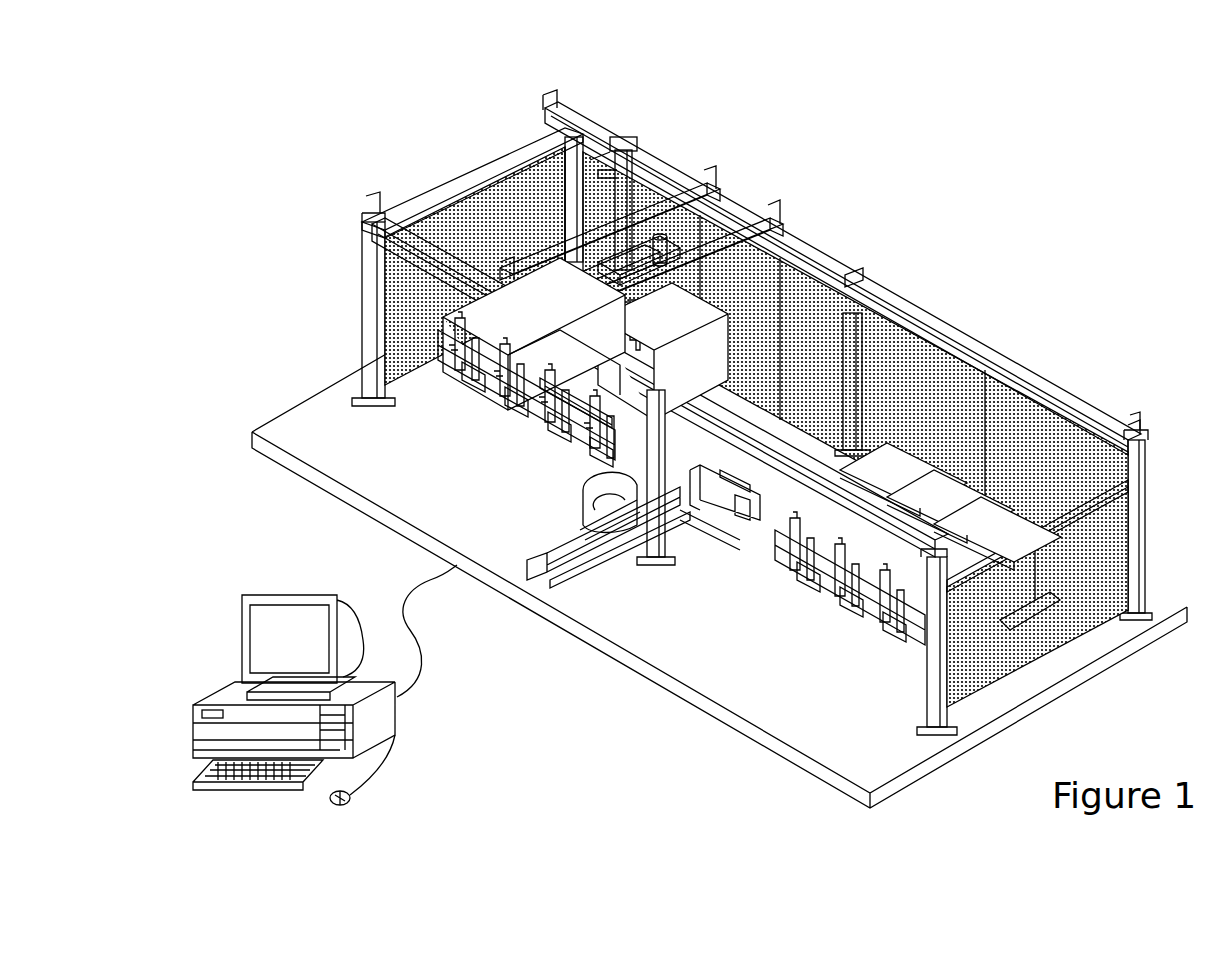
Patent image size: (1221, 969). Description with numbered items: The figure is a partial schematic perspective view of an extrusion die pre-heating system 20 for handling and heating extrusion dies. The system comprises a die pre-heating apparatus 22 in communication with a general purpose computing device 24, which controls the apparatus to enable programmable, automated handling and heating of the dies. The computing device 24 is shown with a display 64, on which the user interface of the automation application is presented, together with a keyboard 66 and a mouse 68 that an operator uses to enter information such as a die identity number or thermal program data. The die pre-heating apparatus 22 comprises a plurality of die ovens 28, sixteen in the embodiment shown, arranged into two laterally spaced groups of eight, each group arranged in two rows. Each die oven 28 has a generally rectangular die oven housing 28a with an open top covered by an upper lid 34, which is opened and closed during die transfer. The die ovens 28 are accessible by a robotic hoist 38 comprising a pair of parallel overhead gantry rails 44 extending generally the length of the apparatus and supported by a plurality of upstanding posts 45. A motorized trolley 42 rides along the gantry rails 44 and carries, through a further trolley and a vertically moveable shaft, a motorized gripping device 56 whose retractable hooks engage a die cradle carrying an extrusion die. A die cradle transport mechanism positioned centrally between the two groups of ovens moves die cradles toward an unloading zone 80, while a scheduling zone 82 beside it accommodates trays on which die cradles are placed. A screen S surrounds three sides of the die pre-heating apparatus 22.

The extrusion die pre-heating system 20 is at (1040, 195).
The die pre-heating apparatus 22 is at (538, 683).
The general purpose computing device 24 is at (320, 663).
The die oven 28 is at (440, 380).
The die oven housing 28a is at (713, 388).
The upper lid 34 is at (612, 393).
The robotic hoist 38 is at (670, 155).
The motorized trolley 42 is at (742, 210).
The overhead gantry rails 44 is at (400, 226).
The upstanding posts 45 is at (362, 332).
The motorized gripping device 56 is at (640, 325).
The display 64 is at (270, 638).
The keyboard 66 is at (250, 780).
The mouse 68 is at (350, 800).
The unloading zone 80 is at (593, 580).
The scheduling zone 82 is at (695, 556).
The screen S is at (1087, 637).